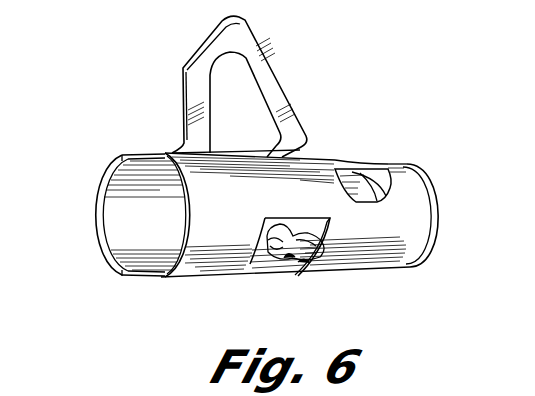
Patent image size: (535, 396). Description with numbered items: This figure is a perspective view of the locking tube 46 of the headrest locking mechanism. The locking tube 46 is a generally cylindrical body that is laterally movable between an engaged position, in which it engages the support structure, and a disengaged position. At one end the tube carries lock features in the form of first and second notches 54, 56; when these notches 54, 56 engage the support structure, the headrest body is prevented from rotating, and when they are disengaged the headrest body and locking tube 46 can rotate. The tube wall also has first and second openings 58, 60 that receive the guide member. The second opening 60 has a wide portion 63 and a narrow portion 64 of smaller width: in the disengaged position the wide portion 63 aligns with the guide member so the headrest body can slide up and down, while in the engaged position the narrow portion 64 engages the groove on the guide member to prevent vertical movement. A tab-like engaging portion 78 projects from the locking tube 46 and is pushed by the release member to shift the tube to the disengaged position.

The locking tube 46 is at (331, 158).
The first notch 54 is at (138, 155).
The second notch 56 is at (138, 280).
The first opening 58 is at (383, 187).
The second opening 60 is at (256, 270).
The wide portion 63 is at (291, 270).
The narrow portion 64 is at (355, 262).
The engaging portion 78 is at (285, 80).